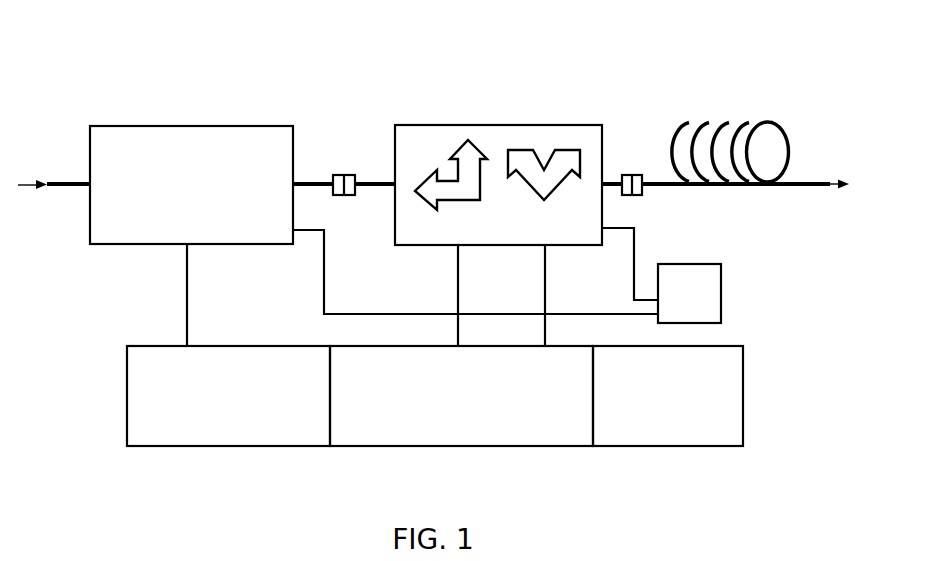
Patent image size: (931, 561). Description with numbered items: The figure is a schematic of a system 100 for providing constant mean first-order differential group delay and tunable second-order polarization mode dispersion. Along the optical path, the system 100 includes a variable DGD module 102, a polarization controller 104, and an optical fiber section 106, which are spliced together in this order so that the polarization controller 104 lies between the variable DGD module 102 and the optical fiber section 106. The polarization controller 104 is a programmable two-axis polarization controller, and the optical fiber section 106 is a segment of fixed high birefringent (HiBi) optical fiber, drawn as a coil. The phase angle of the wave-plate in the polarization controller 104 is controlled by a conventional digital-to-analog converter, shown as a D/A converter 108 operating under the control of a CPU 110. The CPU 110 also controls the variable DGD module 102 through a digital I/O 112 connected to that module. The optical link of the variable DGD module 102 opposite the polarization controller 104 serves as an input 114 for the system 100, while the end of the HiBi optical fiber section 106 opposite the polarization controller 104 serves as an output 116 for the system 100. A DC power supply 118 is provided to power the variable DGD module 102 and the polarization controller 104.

The system 100 is at (155, 55).
The variable DGD module 102 is at (174, 188).
The polarization controller 104 is at (482, 236).
The optical fiber section 106 is at (746, 186).
The D/A converter 108 is at (415, 400).
The CPU 110 is at (623, 400).
The digital I/O 112 is at (211, 400).
The input 114 is at (26, 186).
The output 116 is at (828, 186).
The DC power supply 118 is at (672, 304).